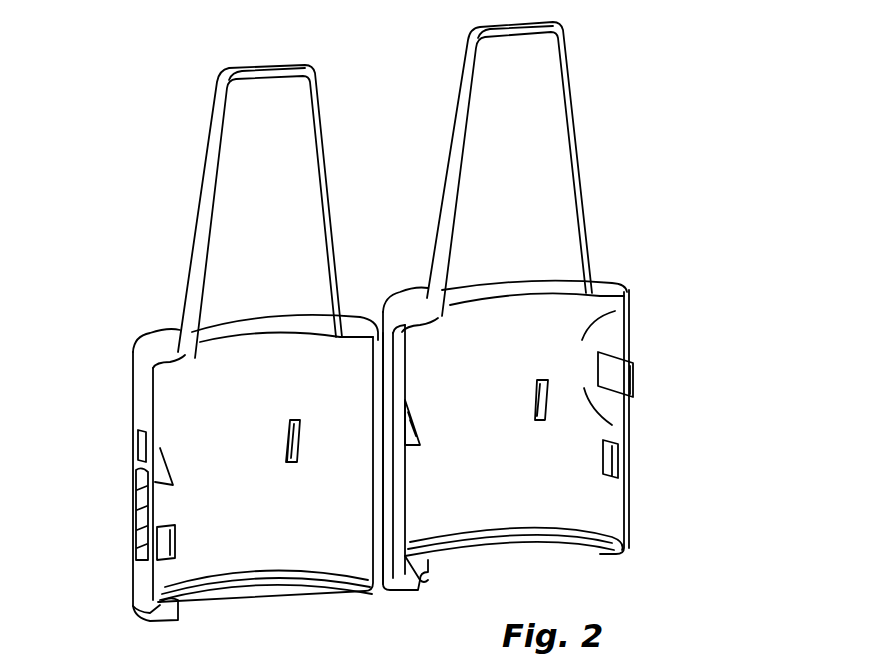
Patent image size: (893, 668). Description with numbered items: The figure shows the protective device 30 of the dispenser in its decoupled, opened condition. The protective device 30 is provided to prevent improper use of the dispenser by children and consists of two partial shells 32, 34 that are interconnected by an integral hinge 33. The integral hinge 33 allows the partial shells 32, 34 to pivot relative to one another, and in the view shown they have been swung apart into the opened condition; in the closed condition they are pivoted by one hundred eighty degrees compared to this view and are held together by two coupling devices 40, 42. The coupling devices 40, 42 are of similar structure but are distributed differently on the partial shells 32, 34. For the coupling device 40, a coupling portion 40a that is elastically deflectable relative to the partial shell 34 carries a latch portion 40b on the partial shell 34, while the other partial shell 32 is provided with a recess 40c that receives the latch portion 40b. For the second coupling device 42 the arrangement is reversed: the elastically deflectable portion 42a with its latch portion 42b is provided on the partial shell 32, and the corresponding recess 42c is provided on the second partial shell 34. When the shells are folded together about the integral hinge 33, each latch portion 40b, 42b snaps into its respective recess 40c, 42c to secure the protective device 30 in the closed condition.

The protective device 30 is at (165, 171).
The partial shell 32 is at (625, 290).
The integral hinge 33 is at (428, 557).
The partial shell 34 is at (158, 340).
The coupling device 40 is at (112, 533).
The coupling portion 40a is at (185, 600).
The latch portion 40b is at (270, 583).
The recess 40c is at (632, 487).
The coupling device 42 is at (112, 433).
The elastically deflectable portion 42a is at (625, 330).
The latch portion 42b is at (636, 366).
The recess 42c is at (155, 450).